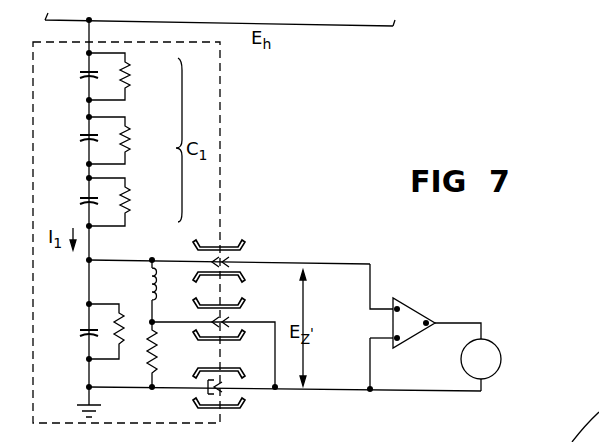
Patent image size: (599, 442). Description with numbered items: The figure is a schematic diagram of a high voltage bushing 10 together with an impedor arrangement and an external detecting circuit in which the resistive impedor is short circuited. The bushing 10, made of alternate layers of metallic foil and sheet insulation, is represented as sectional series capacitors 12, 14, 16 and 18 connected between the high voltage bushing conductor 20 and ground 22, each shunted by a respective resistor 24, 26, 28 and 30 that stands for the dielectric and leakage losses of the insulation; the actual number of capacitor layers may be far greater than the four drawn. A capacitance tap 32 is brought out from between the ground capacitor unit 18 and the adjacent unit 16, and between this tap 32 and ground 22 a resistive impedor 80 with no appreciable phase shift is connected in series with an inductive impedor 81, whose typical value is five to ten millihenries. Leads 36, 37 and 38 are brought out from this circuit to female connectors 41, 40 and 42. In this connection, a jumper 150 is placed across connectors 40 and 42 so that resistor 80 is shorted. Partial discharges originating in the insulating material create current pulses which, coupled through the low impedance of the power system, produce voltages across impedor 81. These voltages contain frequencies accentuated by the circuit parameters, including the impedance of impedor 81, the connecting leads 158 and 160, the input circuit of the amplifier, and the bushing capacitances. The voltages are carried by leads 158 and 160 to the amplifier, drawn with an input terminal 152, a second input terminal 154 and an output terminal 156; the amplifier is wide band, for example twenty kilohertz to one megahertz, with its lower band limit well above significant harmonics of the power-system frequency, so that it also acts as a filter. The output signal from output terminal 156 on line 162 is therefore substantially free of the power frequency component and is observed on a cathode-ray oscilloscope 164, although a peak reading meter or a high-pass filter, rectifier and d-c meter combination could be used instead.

The bushing 10 is at (221, 134).
The sectional series capacitor 12 is at (78, 72).
The sectional series capacitor 14 is at (78, 137).
The sectional series capacitor 16 is at (78, 200).
The ground capacitor unit 18 is at (80, 341).
The high voltage bushing conductor 20 is at (343, 26).
The ground 22 is at (98, 389).
The resistor 24 is at (131, 78).
The resistor 26 is at (131, 146).
The resistor 28 is at (131, 208).
The resistor 30 is at (106, 331).
The capacitance tap 32 is at (89, 260).
The lead 36 is at (172, 260).
The lead 37 is at (175, 322).
The lead 38 is at (179, 389).
The female connector 40 is at (238, 338).
The female connector 41 is at (234, 244).
The female connector 42 is at (240, 409).
The resistive impedor 80 is at (148, 356).
The inductive impedor 81 is at (147, 290).
The jumper 150 is at (281, 321).
The amplifier input 152 is at (398, 308).
The amplifier input 154 is at (397, 341).
The amplifier output 156 is at (425, 321).
The connecting lead 158 is at (322, 262).
The connecting lead 160 is at (328, 390).
The output line 162 is at (465, 321).
The cathode-ray oscilloscope 164 is at (496, 343).